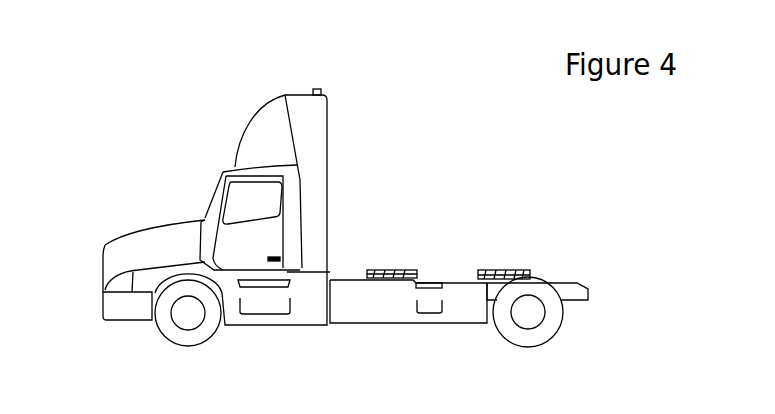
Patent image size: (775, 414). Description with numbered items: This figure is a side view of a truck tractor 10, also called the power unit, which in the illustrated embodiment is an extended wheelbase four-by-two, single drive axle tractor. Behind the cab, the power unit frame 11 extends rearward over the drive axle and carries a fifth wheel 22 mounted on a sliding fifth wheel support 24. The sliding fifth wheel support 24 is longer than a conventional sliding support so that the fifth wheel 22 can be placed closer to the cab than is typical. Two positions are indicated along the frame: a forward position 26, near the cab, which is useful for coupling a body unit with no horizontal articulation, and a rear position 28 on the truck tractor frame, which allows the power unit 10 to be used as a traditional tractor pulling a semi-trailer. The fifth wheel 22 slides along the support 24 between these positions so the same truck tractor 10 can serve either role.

The truck tractor 10 is at (175, 180).
The power unit frame 11 is at (577, 283).
The fifth wheel 22 is at (378, 263).
The sliding fifth wheel support 24 is at (450, 277).
The forward position 26 is at (363, 225).
The rear position 28 is at (528, 255).